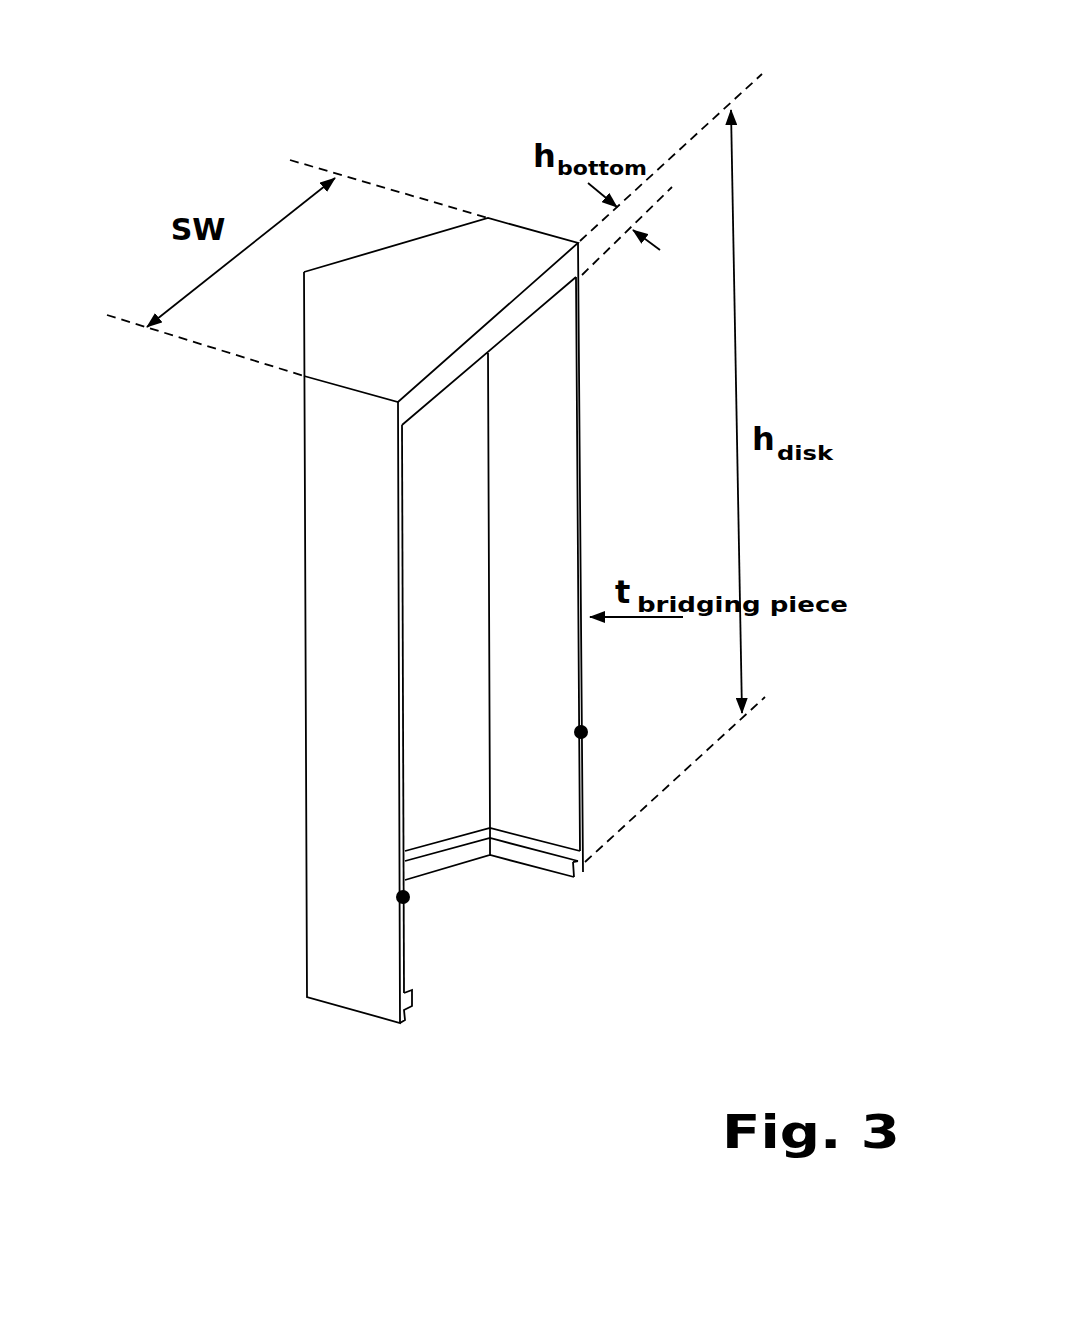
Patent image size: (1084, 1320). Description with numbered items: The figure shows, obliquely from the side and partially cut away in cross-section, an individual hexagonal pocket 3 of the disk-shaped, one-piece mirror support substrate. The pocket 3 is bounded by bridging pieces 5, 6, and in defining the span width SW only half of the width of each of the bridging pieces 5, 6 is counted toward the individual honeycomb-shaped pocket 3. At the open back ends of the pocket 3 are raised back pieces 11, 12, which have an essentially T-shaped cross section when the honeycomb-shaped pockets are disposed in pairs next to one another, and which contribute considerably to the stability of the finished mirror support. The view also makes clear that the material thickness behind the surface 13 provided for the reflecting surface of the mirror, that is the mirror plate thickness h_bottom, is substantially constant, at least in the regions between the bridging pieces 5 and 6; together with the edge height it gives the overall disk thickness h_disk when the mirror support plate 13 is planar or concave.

The hexagonal pocket 3 is at (507, 255).
The surface provided for the reflecting surface of the mirror 13 is at (297, 315).
The bridging piece 5 is at (403, 897).
The bridging piece 6 is at (581, 732).
The raised back piece 11 is at (410, 1013).
The raised back piece 12 is at (580, 869).